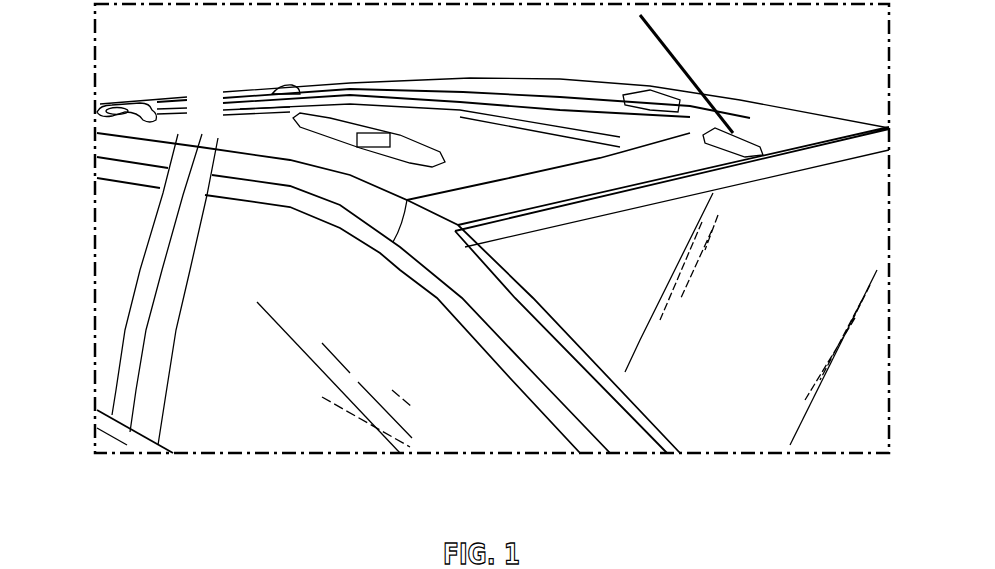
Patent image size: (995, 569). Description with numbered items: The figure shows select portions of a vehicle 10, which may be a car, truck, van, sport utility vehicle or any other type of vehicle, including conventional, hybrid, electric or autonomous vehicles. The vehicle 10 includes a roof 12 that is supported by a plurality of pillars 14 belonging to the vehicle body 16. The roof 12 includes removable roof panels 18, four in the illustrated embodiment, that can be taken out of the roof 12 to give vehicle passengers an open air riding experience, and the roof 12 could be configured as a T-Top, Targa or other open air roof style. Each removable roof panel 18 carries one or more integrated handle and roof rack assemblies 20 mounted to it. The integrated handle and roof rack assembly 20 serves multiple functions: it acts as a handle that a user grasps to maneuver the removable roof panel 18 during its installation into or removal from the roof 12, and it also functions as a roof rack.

The vehicle 10 is at (873, 125).
The roof 12 is at (560, 202).
The pillars 14 is at (889, 128).
The vehicle body 16 is at (127, 440).
The removable roof panel 18 is at (220, 119).
The integrated handle and roof rack assembly 20 is at (125, 121).